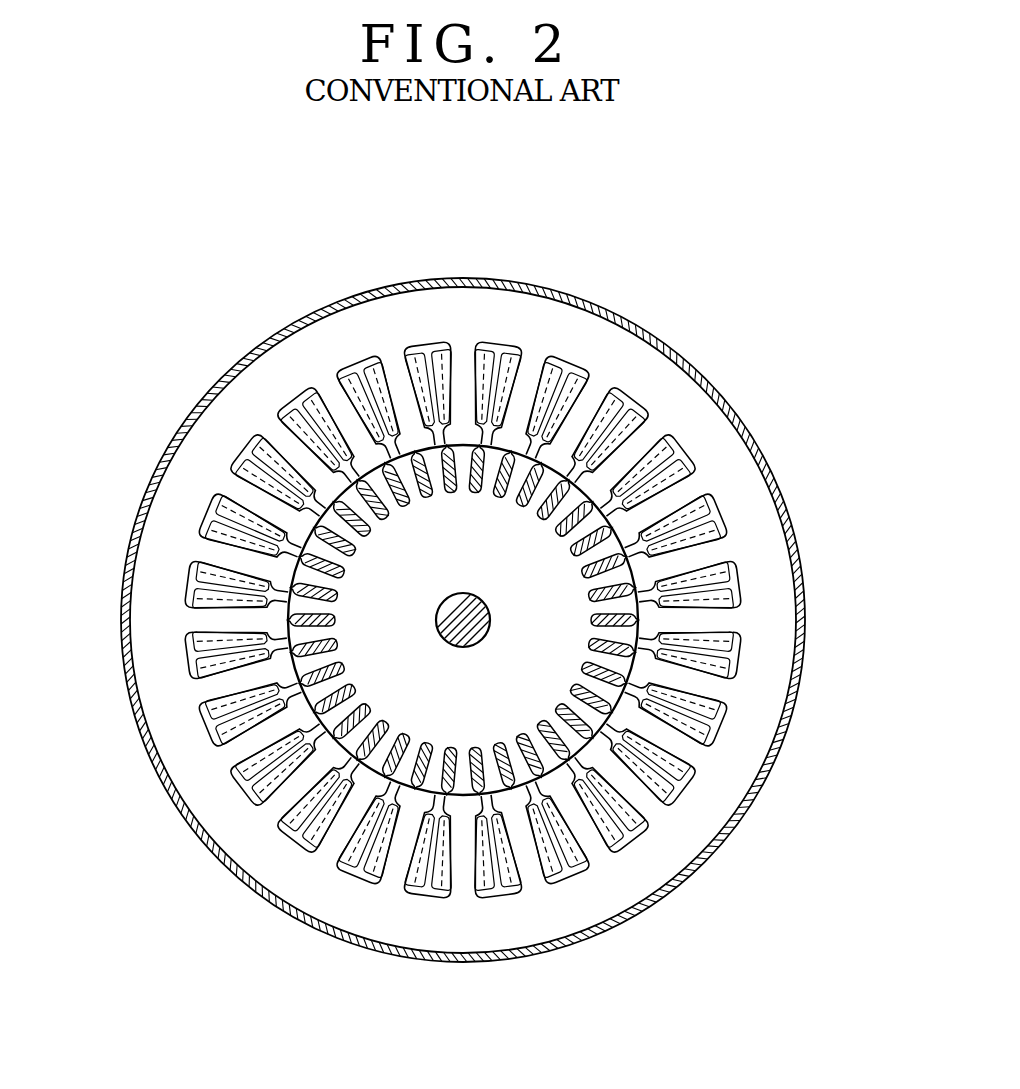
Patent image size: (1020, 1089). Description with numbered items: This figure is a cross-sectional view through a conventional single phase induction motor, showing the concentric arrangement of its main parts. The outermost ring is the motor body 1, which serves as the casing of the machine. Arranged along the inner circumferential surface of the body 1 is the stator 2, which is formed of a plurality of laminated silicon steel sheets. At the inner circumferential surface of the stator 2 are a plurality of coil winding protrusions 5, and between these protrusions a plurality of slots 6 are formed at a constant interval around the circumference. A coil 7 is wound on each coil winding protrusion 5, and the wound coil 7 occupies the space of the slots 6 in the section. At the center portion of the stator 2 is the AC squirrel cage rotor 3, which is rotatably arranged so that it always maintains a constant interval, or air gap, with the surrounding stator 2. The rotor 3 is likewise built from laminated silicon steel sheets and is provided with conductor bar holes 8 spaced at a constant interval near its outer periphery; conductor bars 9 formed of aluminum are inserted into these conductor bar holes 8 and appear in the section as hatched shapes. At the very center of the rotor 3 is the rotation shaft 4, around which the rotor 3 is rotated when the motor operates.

The motor body 1 is at (793, 532).
The stator 2 is at (200, 432).
The AC squirrel cage rotor 3 is at (376, 609).
The rotation shaft 4 is at (474, 621).
The coil winding protrusions 5 is at (575, 422).
The slots 6 is at (630, 396).
The coil 7 is at (668, 437).
The conductor bar holes 8 is at (317, 717).
The conductor bars 9 is at (317, 672).